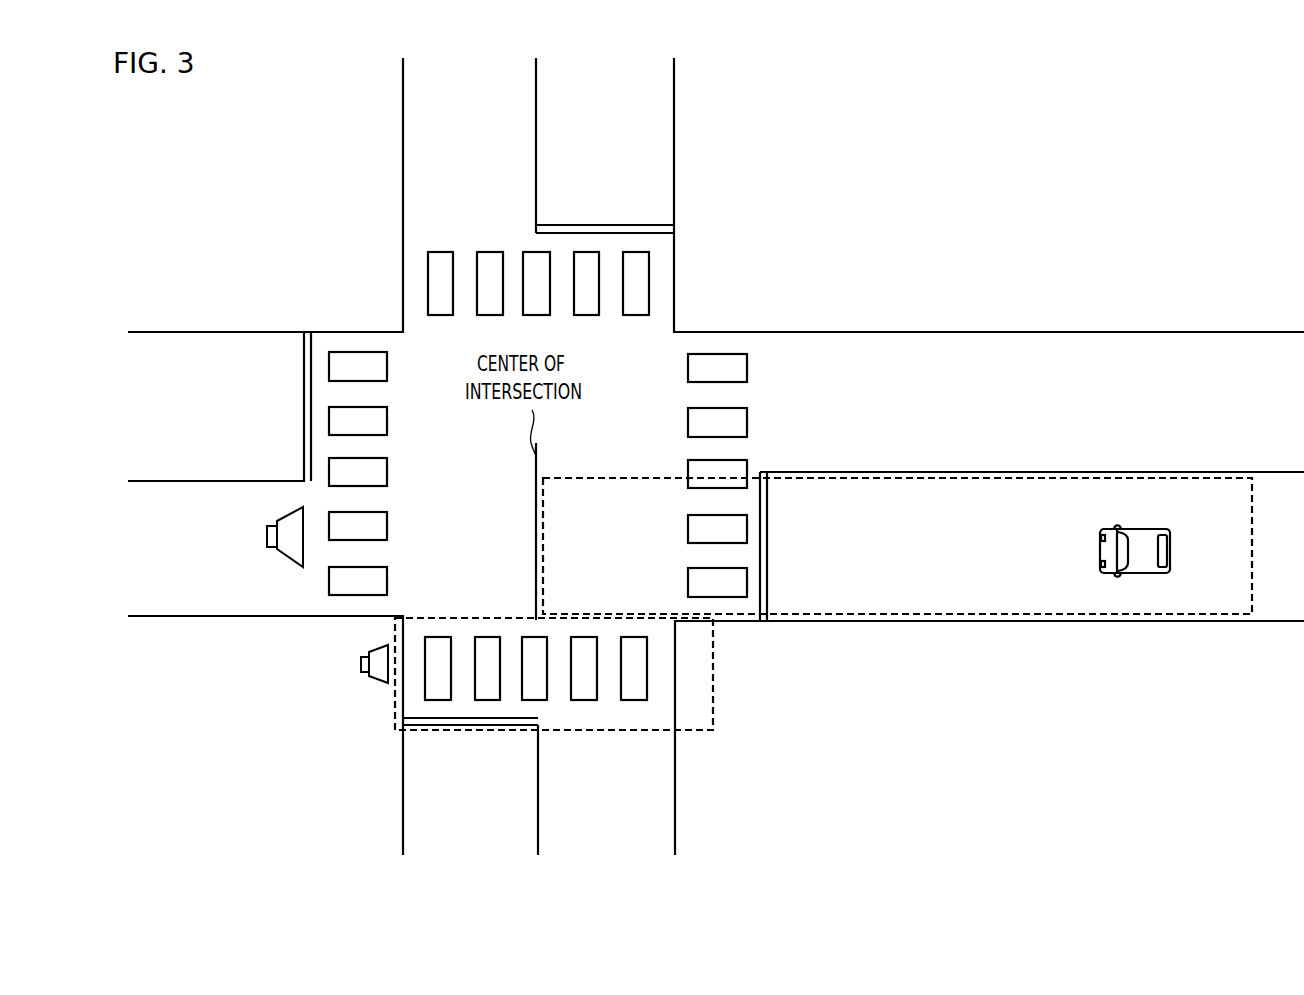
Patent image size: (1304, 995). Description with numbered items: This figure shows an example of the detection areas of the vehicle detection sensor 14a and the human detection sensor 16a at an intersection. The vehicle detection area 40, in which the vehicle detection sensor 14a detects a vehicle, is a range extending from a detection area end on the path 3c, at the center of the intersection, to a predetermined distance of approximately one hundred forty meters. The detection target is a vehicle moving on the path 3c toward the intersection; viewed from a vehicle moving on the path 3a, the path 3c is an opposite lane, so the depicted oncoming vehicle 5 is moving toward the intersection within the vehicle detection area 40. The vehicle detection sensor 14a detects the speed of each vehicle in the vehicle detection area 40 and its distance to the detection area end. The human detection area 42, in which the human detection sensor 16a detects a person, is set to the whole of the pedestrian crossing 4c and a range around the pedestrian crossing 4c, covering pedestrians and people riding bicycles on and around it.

The path 3a is at (243, 360).
The path 3c is at (1288, 588).
The pedestrian crossing 4c is at (656, 683).
The oncoming vehicle 5 is at (1142, 574).
The vehicle detection sensor 14a is at (271, 548).
The human detection sensor 16a is at (365, 673).
The vehicle detection area 40 is at (993, 592).
The human detection area 42 is at (697, 688).